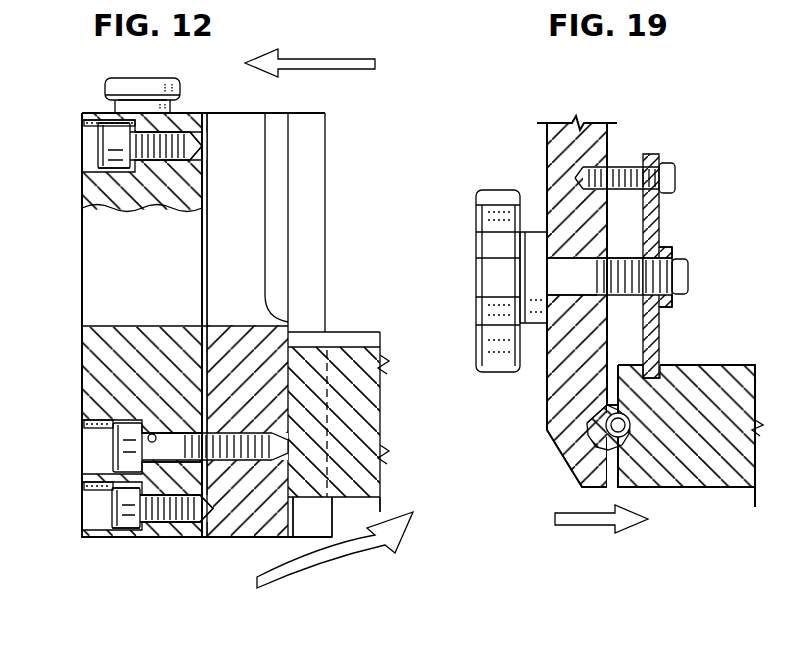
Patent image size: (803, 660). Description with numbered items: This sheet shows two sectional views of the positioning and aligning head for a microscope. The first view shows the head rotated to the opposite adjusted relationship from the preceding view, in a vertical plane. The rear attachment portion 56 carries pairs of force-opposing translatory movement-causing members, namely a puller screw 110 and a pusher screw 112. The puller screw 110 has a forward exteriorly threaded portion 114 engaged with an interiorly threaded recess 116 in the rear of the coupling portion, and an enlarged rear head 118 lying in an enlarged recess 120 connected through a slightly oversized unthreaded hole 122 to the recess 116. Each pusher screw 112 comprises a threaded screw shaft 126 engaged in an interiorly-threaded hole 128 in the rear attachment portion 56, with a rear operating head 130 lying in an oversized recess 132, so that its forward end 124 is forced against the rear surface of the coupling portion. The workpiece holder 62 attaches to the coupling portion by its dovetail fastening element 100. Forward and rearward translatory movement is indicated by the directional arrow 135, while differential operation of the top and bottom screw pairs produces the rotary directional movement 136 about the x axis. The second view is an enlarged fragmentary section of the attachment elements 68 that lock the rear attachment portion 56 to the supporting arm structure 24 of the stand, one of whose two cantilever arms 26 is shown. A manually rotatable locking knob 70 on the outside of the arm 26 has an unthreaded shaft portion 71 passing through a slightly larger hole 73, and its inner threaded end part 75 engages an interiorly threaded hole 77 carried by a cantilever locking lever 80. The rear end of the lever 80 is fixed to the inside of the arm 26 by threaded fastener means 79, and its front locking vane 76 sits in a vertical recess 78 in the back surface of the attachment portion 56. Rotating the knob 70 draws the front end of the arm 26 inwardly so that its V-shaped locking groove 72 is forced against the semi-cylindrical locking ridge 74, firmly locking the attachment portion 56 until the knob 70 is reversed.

In FIG. 19, the supporting arm structure 24 is at (538, 181).
In FIG. 19, the cantilever arm 26 is at (560, 122).
In FIG. 19, the rear attachment portion 56 is at (679, 496).
In FIG. 12, the workpiece holder 62 is at (396, 491).
In FIG. 19, the attachment elements 68 is at (662, 222).
In FIG. 19, the locking knob 70 is at (477, 222).
In FIG. 19, the shaft portion 71 is at (565, 284).
In FIG. 19, the V-shaped locking groove 72 is at (584, 457).
In FIG. 19, the hole 73 is at (592, 292).
In FIG. 19, the locking ridge 74 is at (549, 431).
In FIG. 19, the inner threaded end part 75 is at (690, 274).
In FIG. 19, the front locking vane 76 is at (668, 368).
In FIG. 19, the interiorly threaded hole 77 is at (674, 243).
In FIG. 19, the vertical recess 78 is at (718, 365).
In FIG. 19, the threaded fastener means 79 is at (672, 150).
In FIG. 19, the cantilever locking lever 80 is at (690, 173).
In FIG. 12, the dovetail fastening element 100 is at (306, 347).
In FIG. 12, the puller screw 110 is at (219, 416).
In FIG. 12, the pusher screw 112 is at (133, 176).
In FIG. 12, the forward exteriorly threaded portion 114 is at (272, 538).
In FIG. 12, the interiorly threaded recess 116 is at (226, 538).
In FIG. 12, the rear head 118 is at (95, 450).
In FIG. 12, the enlarged recess 120 is at (84, 424).
In FIG. 12, the unthreaded hole 122 is at (160, 430).
In FIG. 12, the forward end 124 is at (207, 114).
In FIG. 12, the threaded screw shaft 126 is at (181, 162).
In FIG. 12, the interiorly-threaded hole 128 is at (204, 162).
In FIG. 12, the rear operating head 130 is at (98, 150).
In FIG. 12, the oversized recess 132 is at (84, 122).
In FIG. 12, the directional arrow 135 is at (322, 58).
In FIG. 12, the rotary directional movement 136 is at (309, 583).